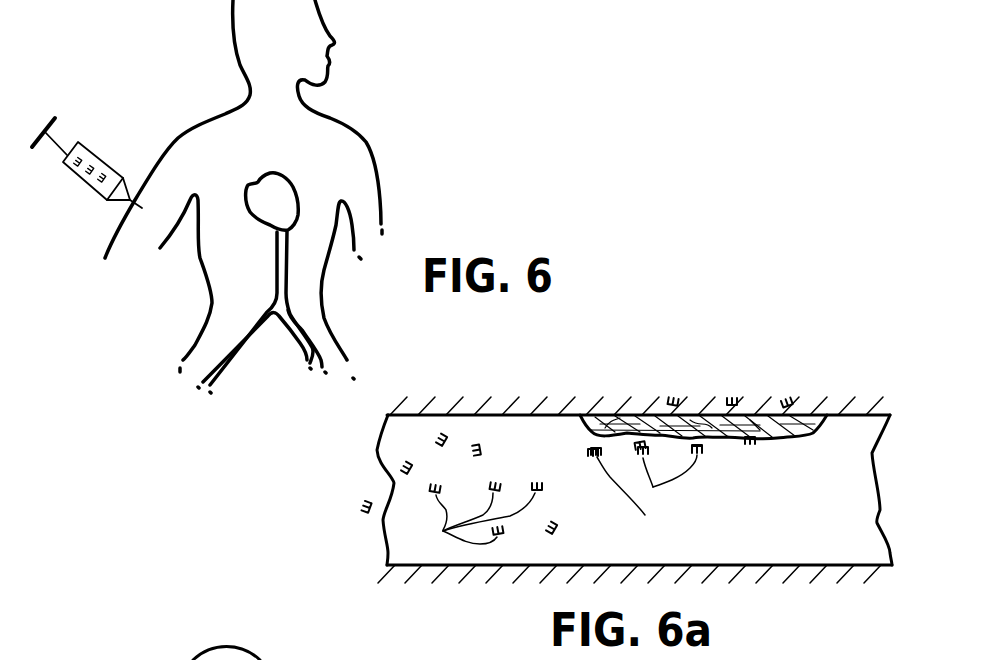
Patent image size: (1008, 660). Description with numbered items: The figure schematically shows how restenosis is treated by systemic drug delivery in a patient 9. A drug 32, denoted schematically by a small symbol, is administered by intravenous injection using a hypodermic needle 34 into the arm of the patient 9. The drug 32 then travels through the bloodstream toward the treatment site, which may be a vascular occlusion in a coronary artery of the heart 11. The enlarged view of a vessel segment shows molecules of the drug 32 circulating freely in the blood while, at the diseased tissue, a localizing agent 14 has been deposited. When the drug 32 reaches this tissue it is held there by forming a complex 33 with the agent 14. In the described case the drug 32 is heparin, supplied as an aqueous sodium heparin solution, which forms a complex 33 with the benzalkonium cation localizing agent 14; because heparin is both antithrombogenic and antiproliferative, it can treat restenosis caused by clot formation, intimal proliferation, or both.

In FIG. 6, the patient 9 is at (357, 123).
In FIG. 6, the heart 11 is at (298, 207).
In FIG. 6, the hypodermic needle 34 is at (102, 155).
In FIG. 6A, the localizing agent 14 is at (676, 398).
In FIG. 6A, the drug 32 is at (443, 530).
In FIG. 6A, the complex 33 is at (653, 487).